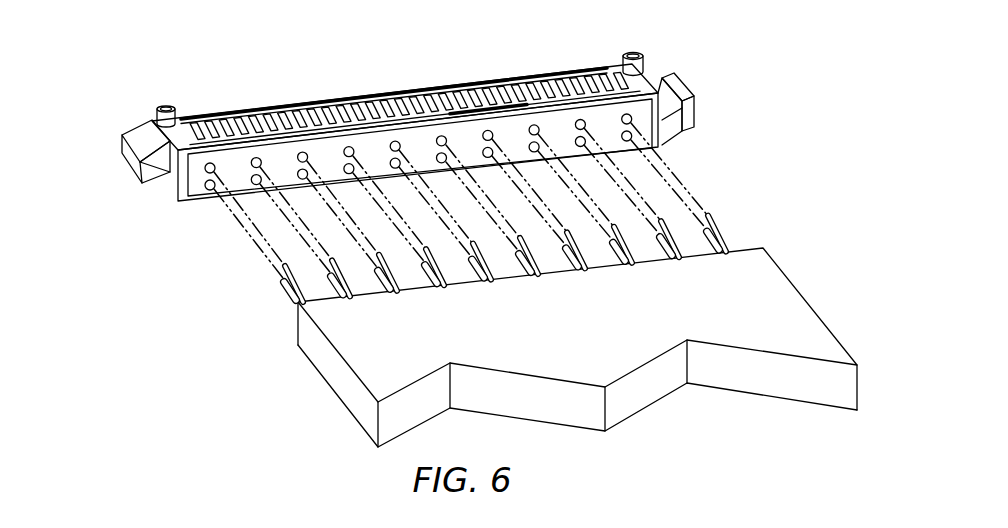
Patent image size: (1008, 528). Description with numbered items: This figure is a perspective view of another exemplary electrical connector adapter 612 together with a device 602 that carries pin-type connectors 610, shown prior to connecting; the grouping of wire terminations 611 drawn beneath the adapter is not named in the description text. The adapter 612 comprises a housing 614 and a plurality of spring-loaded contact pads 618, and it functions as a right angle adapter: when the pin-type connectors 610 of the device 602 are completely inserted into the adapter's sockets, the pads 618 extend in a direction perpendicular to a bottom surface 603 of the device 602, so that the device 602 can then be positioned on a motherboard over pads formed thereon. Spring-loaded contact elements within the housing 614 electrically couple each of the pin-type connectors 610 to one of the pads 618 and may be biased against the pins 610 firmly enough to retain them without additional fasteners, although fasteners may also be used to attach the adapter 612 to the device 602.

The device 602 is at (805, 276).
The bottom surface 603 is at (347, 328).
The pin-type connectors 610 is at (750, 178).
The wire terminal plate 611 is at (652, 148).
The electrical connector adapter 612 is at (680, 47).
The housing 614 is at (111, 174).
The spring-loaded contact pads 618 is at (183, 110).